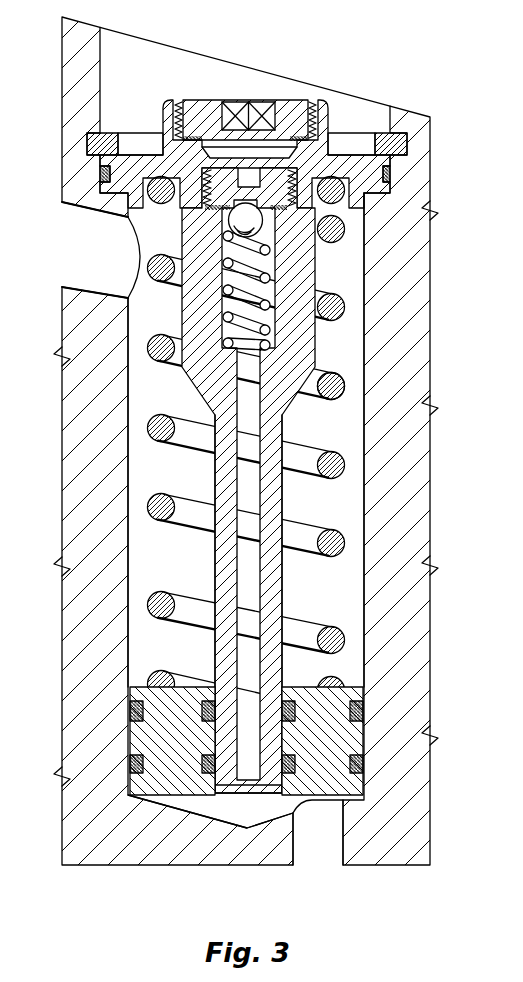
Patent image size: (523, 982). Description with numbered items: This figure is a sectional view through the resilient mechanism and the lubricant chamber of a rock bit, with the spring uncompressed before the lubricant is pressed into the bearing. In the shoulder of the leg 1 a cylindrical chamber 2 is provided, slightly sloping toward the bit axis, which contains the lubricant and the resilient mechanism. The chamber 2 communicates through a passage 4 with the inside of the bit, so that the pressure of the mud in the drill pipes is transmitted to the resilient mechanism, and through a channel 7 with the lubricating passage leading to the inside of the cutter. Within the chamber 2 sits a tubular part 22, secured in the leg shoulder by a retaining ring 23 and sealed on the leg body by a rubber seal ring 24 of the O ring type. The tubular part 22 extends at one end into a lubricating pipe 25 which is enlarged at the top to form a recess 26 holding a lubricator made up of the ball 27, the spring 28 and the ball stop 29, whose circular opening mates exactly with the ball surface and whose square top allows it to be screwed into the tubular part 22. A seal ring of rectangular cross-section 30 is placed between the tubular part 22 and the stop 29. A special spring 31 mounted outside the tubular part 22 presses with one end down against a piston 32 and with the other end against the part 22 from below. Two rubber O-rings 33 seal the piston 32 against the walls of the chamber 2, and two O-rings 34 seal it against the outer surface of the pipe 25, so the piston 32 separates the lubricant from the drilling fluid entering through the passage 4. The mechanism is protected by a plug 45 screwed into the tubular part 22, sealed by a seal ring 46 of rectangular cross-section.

The leg 1 is at (78, 72).
The cylindrical chamber 2 is at (330, 588).
The passage 4 is at (77, 233).
The channel 7 is at (327, 845).
The tubular part 22 is at (170, 122).
The retaining ring 23 is at (108, 133).
The rubber seal ring 24 is at (392, 178).
The lubricating pipe 25 is at (270, 510).
The recess 26 is at (266, 290).
The ball 27 is at (267, 233).
The spring 28 is at (268, 303).
The ball stop 29 is at (332, 155).
The seal ring of rectangular cross-section 30 is at (290, 208).
The special spring 31 is at (347, 395).
The piston 32 is at (310, 790).
The rubber O-rings 33 is at (366, 758).
The O-rings 34 is at (290, 758).
The plug 45 is at (284, 107).
The seal ring of rectangular cross-section 46 is at (328, 108).